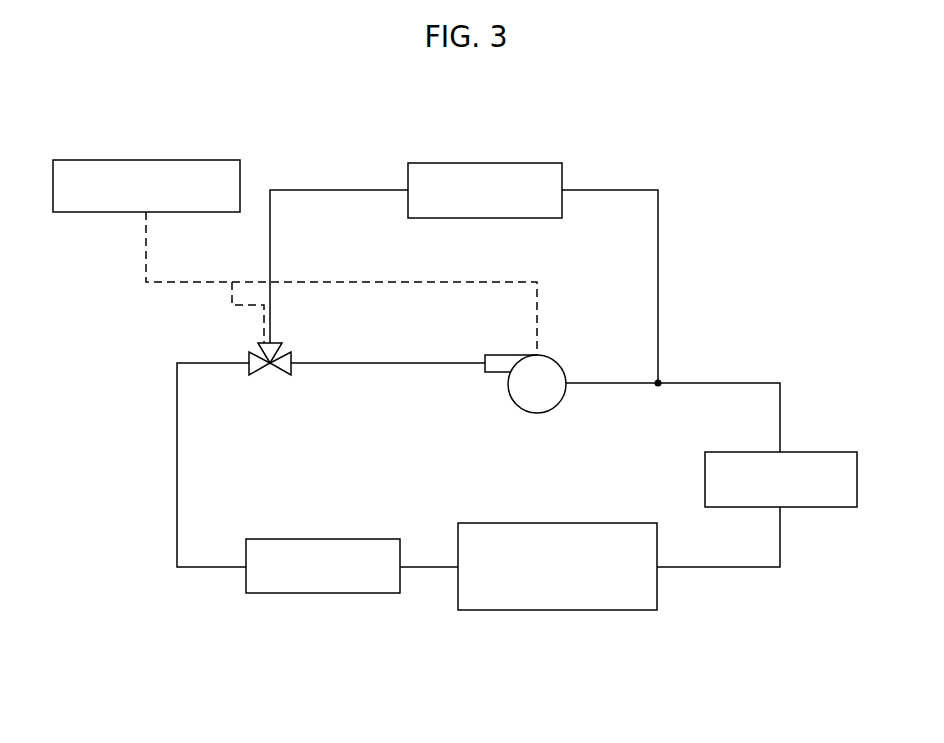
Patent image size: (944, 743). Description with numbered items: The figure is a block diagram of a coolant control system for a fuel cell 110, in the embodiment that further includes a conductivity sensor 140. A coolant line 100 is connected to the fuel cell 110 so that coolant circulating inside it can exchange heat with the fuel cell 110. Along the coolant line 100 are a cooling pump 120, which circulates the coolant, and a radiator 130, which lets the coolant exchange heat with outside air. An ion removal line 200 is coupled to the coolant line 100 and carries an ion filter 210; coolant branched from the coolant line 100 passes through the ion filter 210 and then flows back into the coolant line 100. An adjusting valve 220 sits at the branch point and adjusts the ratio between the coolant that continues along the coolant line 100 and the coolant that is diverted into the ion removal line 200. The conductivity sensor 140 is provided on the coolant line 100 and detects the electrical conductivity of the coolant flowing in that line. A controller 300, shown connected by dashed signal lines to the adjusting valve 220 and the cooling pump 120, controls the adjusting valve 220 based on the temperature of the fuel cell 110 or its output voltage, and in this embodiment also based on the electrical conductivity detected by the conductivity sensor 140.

The coolant line 100 is at (695, 567).
The fuel cell 110 is at (298, 593).
The cooling pump 120 is at (537, 413).
The radiator 130 is at (830, 452).
The conductivity sensor 140 is at (555, 610).
The ion removal line 200 is at (658, 245).
The ion filter 210 is at (532, 163).
The adjusting valve 220 is at (276, 375).
The controller 300 is at (178, 160).